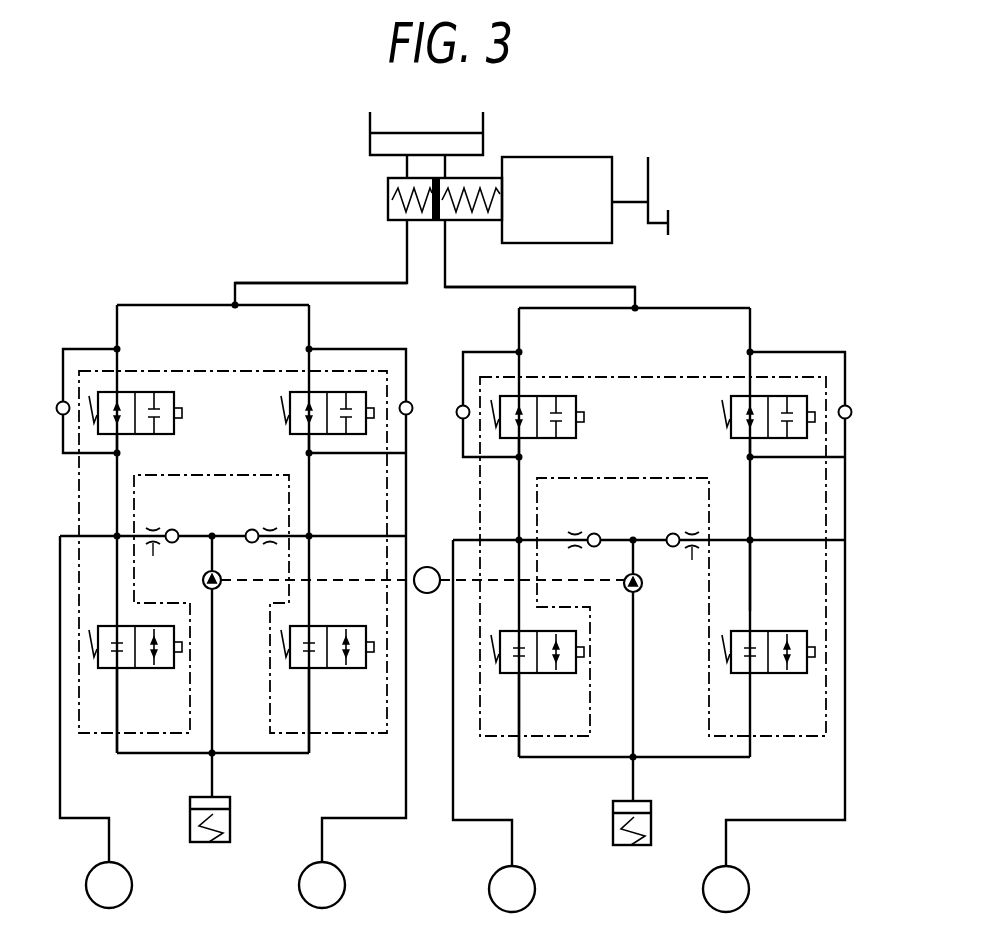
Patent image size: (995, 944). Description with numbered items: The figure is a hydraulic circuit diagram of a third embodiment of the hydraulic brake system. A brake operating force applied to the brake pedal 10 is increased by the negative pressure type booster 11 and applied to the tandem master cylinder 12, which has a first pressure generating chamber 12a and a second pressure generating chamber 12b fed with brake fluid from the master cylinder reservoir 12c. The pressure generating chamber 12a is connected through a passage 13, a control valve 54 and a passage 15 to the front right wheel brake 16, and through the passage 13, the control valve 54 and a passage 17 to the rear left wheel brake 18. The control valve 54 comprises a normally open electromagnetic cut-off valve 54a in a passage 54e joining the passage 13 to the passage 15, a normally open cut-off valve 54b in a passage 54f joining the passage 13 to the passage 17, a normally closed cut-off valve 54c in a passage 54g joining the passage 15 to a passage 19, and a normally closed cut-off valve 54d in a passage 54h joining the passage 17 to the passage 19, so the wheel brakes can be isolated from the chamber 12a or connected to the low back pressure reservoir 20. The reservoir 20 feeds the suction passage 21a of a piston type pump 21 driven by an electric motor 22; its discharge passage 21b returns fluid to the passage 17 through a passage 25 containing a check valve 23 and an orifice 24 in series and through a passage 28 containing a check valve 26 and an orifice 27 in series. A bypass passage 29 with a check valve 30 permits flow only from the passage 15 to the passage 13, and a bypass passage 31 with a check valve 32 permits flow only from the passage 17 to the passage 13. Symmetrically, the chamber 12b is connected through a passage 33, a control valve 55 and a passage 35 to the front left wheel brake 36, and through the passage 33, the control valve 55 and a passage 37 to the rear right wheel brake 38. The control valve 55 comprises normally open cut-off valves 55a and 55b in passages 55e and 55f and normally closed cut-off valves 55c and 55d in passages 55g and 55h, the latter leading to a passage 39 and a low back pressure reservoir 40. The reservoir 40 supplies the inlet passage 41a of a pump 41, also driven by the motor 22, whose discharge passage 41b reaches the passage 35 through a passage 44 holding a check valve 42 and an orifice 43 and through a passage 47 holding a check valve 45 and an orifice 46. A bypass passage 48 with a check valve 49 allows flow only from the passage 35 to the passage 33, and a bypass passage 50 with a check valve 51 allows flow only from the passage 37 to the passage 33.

The brake pedal 10 is at (660, 171).
The negative pressure type booster 11 is at (533, 157).
The tandem master cylinder 12 is at (388, 192).
The first pressure generating chamber 12a is at (468, 213).
The second pressure generating chamber 12b is at (388, 213).
The master cylinder reservoir 12c is at (370, 142).
The passage 13 is at (583, 287).
The passage 15 is at (751, 503).
The front right wheel brake 16 is at (749, 888).
The passage 17 is at (518, 516).
The rear left wheel brake 18 is at (535, 888).
The passage 19 is at (555, 760).
The low back pressure reservoir 20 is at (652, 822).
The pump 21 is at (640, 591).
The suction passage 21a is at (634, 697).
The discharge passage 21b is at (632, 560).
The electric motor 22 is at (426, 567).
The check valve 23 is at (692, 531).
The orifice 24 is at (687, 570).
The passage 25 is at (668, 533).
The check valve 26 is at (594, 533).
The orifice 27 is at (573, 531).
The passage 28 is at (630, 536).
The bypass passage 29 is at (789, 352).
The check valve 30 is at (853, 413).
The bypass passage 31 is at (478, 352).
The check valve 32 is at (461, 420).
The passage 33 is at (278, 283).
The passage 35 is at (115, 514).
The front left wheel brake 36 is at (132, 885).
The passage 37 is at (310, 503).
The rear right wheel brake 38 is at (345, 885).
The passage 39 is at (150, 756).
The low back pressure reservoir 40 is at (231, 822).
The pump 41 is at (218, 588).
The inlet passage 41a is at (213, 697).
The discharge passage 41b is at (215, 555).
The check valve 42 is at (153, 528).
The orifice 43 is at (162, 564).
The passage 44 is at (172, 529).
The check valve 45 is at (252, 529).
The orifice 46 is at (270, 528).
The passage 47 is at (212, 530).
The bypass passage 48 is at (75, 350).
The check valve 49 is at (57, 406).
The bypass passage 50 is at (348, 349).
The check valve 51 is at (413, 408).
The control valve 54 is at (662, 377).
The normally open electromagnetic cut-off valve 54a is at (730, 408).
The normally open electromagnetic cut-off valve 54b is at (583, 402).
The normally closed electromagnetic cut-off valve 54c is at (773, 675).
The normally closed electromagnetic cut-off valve 54d is at (565, 675).
The passage 54e is at (742, 442).
The passage 54f is at (525, 442).
The passage 54g is at (752, 589).
The passage 54h is at (537, 707).
The control valve 55 is at (188, 371).
The normally open electromagnetic cut-off valve 55a is at (180, 400).
The normally open electromagnetic cut-off valve 55b is at (290, 432).
The normally closed electromagnetic cut-off valve 55c is at (163, 673).
The normally closed electromagnetic cut-off valve 55d is at (353, 673).
The passage 55e is at (120, 440).
The passage 55f is at (308, 438).
The passage 55g is at (115, 715).
The passage 55h is at (308, 715).